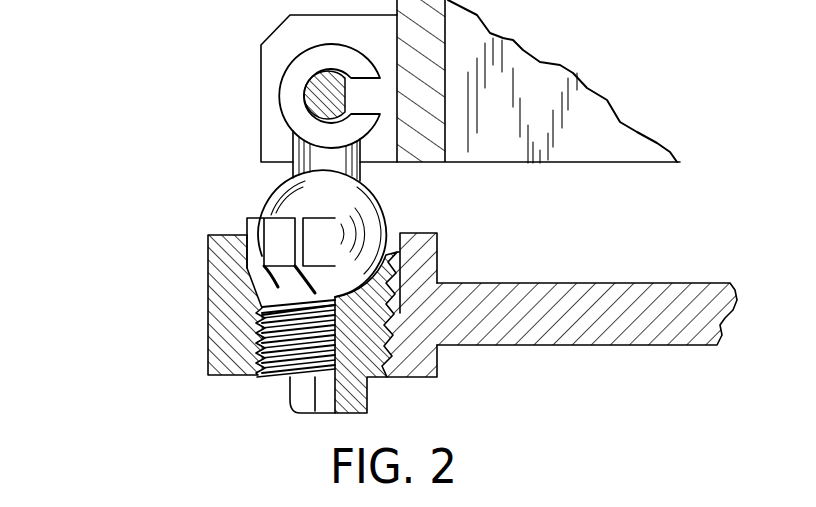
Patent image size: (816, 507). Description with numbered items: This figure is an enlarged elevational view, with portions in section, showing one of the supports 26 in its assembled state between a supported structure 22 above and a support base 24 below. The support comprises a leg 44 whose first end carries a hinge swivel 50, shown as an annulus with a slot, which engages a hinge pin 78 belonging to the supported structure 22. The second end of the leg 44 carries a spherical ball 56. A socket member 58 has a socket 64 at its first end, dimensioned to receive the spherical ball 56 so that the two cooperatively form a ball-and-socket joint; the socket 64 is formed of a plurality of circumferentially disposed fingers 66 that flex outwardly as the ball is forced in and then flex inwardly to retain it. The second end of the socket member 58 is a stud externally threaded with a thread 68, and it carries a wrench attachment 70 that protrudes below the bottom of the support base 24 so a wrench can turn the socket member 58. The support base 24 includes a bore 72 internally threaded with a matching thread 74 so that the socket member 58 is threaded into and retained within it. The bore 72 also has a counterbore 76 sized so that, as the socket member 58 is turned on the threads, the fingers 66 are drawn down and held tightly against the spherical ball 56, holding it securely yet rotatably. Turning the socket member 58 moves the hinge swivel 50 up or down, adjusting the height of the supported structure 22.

The supported structure 22 is at (532, 88).
The support base 24 is at (532, 345).
The support 26 is at (130, 95).
The leg 44 is at (300, 155).
The hinge swivel 50 is at (295, 62).
The spherical ball 56 is at (270, 195).
The socket member 58 is at (257, 328).
The socket 64 is at (258, 243).
The fingers 66 is at (247, 225).
The thread 68 is at (275, 375).
The wrench attachment 70 is at (287, 410).
The bore 72 is at (250, 360).
The matching thread 74 is at (423, 378).
The counterbore 76 is at (253, 293).
The hinge pin 78 is at (323, 90).